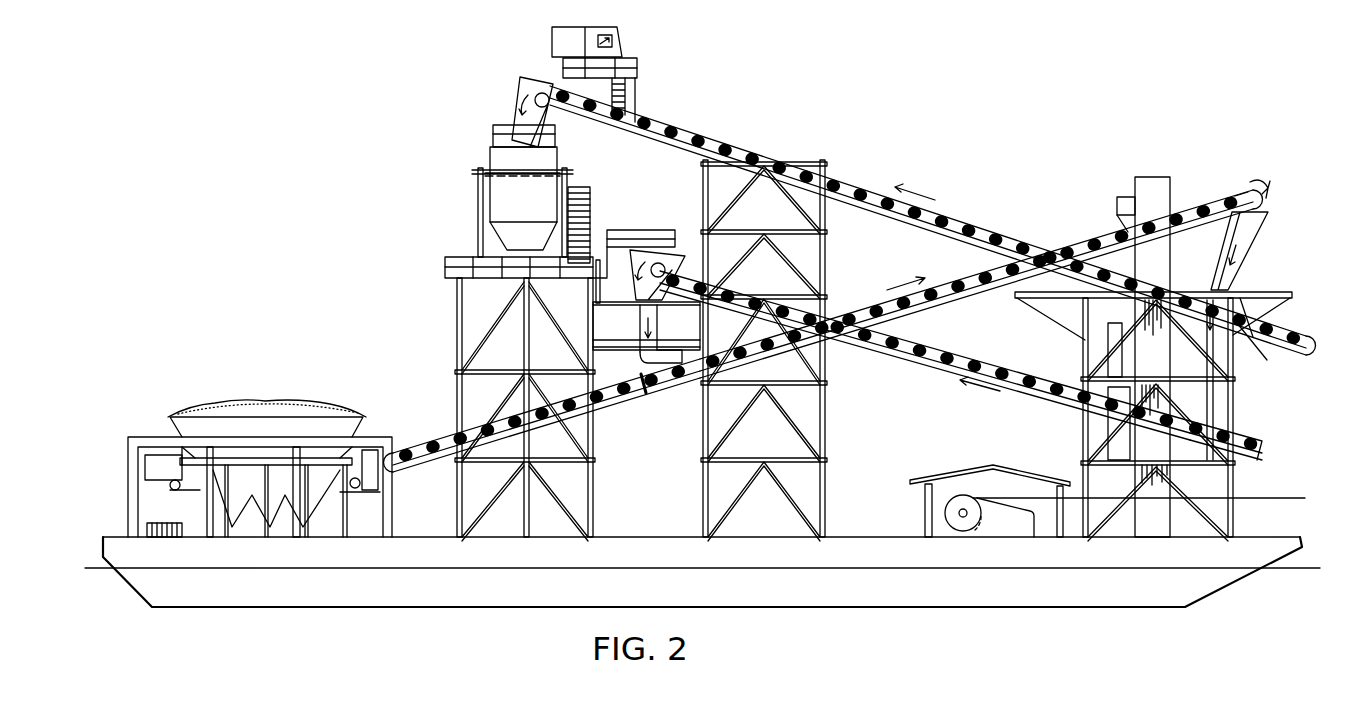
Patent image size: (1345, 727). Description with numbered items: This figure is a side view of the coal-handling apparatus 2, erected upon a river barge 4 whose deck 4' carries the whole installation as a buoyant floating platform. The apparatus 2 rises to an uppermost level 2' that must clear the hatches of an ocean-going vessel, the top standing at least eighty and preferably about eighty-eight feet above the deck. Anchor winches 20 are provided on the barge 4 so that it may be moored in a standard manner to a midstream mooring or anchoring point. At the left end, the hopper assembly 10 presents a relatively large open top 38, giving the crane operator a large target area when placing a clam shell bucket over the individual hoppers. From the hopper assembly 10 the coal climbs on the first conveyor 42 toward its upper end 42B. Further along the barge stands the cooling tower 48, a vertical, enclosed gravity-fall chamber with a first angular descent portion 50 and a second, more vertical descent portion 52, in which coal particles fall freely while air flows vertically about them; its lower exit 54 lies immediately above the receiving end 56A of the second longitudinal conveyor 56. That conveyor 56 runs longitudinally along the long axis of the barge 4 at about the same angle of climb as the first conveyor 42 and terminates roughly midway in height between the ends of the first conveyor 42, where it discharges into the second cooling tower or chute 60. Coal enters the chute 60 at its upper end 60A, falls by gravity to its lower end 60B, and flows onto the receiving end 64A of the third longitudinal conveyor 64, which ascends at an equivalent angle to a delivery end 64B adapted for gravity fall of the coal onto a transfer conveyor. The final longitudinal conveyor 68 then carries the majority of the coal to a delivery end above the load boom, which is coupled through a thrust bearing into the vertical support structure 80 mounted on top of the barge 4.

The apparatus 2 is at (456, 215).
The uppermost level of the apparatus 2' is at (480, 182).
The barge 4 is at (702, 572).
The deck 4' is at (714, 517).
The hopper assembly 10 is at (170, 425).
The anchor winches 20 is at (946, 506).
The top of hopper 38 is at (245, 432).
The first conveyor 42 is at (614, 398).
The upper end of first conveyor 42B is at (1212, 197).
The cooling tower 48 is at (1243, 237).
The first angular descent portion 50 is at (1207, 288).
The second more vertical descent portion 52 is at (1213, 350).
The lower exit 54 is at (1207, 427).
The second longitudinal conveyor 56 is at (903, 352).
The receiving end of second longitudinal conveyor 56A is at (1237, 431).
The second cooling tower or chute 60 is at (642, 318).
The upper end of chute 60A is at (638, 273).
The lower end of chute 60B is at (648, 366).
The third longitudinal conveyor 64 is at (783, 341).
The receiving end of third longitudinal conveyor 64A is at (650, 386).
The delivery end of third longitudinal conveyor 64B is at (1240, 183).
The final longitudinal conveyor 68 is at (770, 158).
The vertical support structure 80 is at (475, 257).